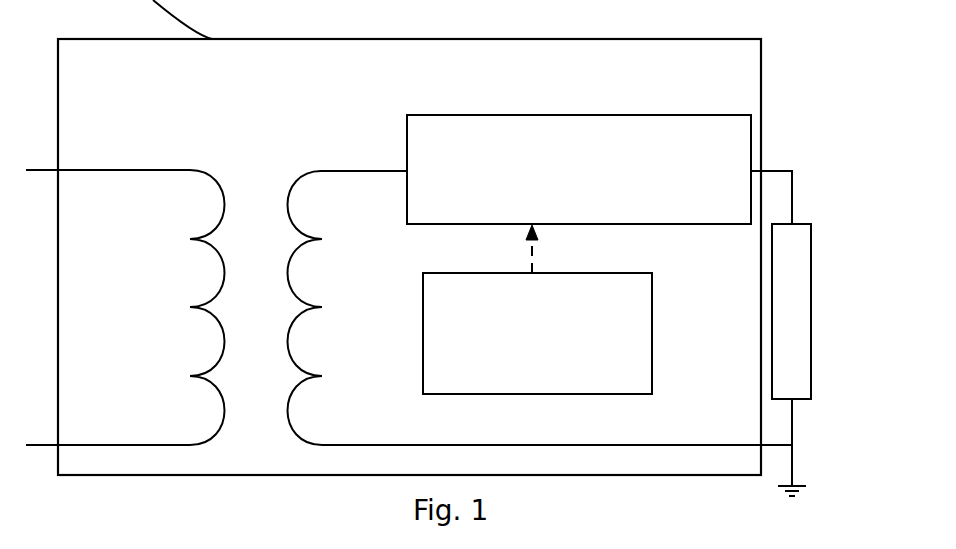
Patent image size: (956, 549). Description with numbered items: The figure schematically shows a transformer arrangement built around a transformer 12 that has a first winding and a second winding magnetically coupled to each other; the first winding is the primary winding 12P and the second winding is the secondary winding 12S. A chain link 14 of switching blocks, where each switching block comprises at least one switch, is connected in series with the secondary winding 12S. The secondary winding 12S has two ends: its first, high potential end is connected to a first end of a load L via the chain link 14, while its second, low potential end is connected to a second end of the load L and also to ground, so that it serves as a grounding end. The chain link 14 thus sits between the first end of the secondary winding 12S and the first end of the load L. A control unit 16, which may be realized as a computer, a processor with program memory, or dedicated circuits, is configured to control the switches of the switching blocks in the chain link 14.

The transformer 12 is at (409, 289).
The primary winding 12P is at (125, 307).
The secondary winding 12S is at (540, 308).
The chain link 14 is at (554, 200).
The control unit 16 is at (517, 357).
The load L is at (800, 333).